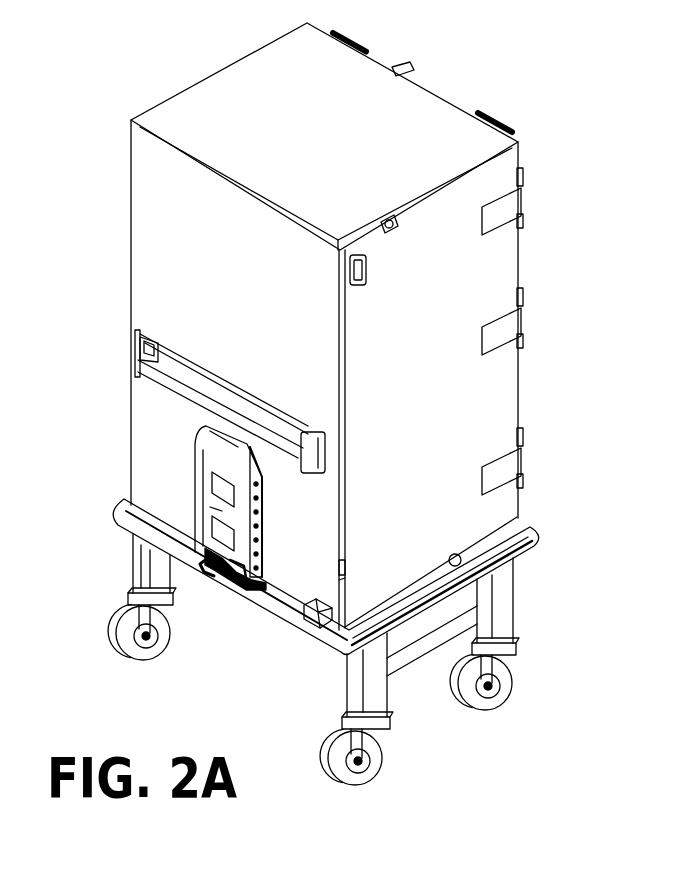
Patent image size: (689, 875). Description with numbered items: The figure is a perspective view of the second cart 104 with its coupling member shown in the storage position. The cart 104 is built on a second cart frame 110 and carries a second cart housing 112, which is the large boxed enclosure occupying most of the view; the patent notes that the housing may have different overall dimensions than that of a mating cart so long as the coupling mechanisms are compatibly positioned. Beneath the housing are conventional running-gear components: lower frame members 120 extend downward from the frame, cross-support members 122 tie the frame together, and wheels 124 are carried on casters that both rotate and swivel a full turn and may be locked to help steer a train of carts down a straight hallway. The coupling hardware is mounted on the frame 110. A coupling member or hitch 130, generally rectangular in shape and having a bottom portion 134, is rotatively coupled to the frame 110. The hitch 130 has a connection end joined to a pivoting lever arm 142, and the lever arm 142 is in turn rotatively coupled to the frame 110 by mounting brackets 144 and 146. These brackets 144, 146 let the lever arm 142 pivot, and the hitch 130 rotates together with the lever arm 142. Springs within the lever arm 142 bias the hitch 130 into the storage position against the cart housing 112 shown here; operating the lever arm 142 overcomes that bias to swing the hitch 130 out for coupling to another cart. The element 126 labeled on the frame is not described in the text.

The second cart 104 is at (460, 67).
The second cart housing 112 is at (518, 267).
The bottom portion 134 is at (220, 510).
The coupling member or hitch 130 is at (260, 517).
The mounting bracket 144 is at (200, 548).
The pivoting lever arm 142 is at (347, 567).
The second cart frame 110 is at (530, 530).
The frame handle rail 126 is at (530, 552).
The lower frame member 120 is at (515, 602).
The wheel 124 is at (507, 697).
The mounting bracket 146 is at (350, 647).
The cross-support member 122 is at (417, 647).